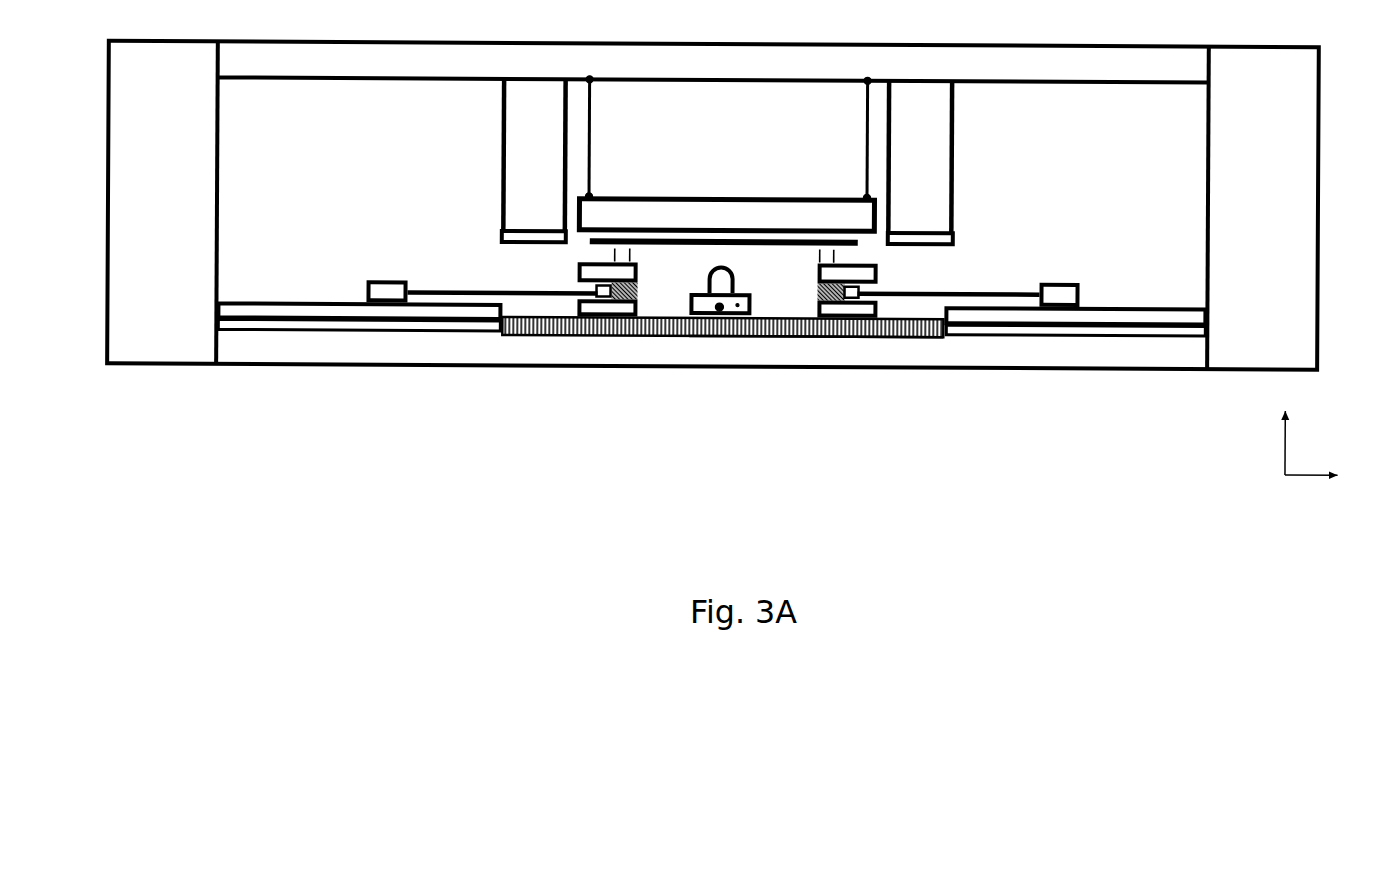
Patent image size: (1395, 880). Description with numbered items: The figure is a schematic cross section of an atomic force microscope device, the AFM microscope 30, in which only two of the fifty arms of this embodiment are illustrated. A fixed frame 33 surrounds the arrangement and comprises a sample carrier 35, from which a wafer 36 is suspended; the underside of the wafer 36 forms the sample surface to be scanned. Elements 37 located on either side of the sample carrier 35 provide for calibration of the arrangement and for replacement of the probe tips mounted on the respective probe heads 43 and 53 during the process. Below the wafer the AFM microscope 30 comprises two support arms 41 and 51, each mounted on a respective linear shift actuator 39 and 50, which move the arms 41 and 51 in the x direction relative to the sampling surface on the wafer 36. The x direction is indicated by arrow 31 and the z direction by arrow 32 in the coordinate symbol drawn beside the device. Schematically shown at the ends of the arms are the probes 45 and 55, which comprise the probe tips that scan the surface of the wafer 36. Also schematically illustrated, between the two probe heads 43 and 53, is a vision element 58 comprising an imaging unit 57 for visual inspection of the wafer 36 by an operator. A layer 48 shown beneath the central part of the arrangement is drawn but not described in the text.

The AFM microscope 30 is at (204, 431).
The arrow indicating x direction 31 is at (1313, 475).
The arrow indicating z direction 32 is at (1284, 448).
The fixed frame 33 is at (1283, 243).
The sample carrier 35 is at (733, 218).
The wafer 36 is at (697, 241).
The calibration elements 37 is at (498, 238).
The linear shift actuator 39 is at (292, 303).
The support arm 41 is at (420, 291).
The probe head 43 is at (578, 274).
The probe 45 is at (633, 254).
The insulating layer 48 is at (918, 325).
The linear shift actuator 50 is at (1153, 305).
The support arm 51 is at (1030, 290).
The probe head 53 is at (880, 272).
The probe 55 is at (818, 257).
The imaging unit 57 is at (720, 281).
The vision element 58 is at (745, 330).